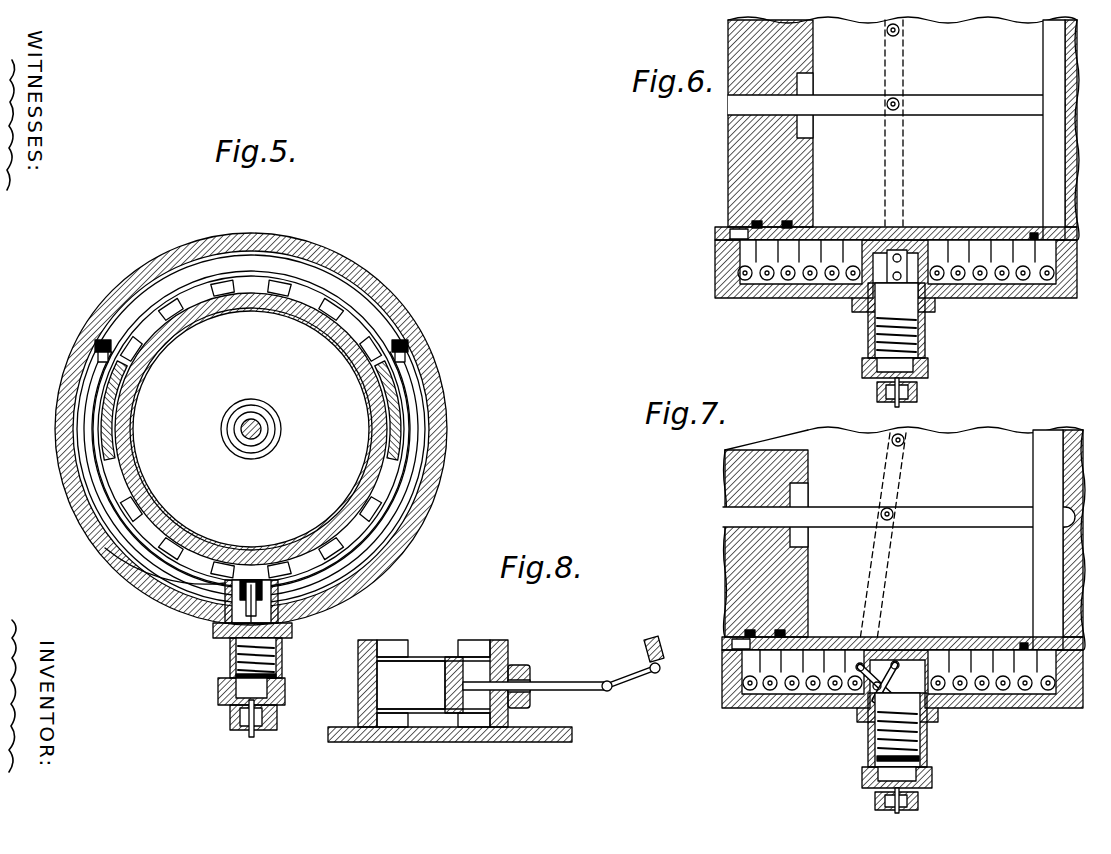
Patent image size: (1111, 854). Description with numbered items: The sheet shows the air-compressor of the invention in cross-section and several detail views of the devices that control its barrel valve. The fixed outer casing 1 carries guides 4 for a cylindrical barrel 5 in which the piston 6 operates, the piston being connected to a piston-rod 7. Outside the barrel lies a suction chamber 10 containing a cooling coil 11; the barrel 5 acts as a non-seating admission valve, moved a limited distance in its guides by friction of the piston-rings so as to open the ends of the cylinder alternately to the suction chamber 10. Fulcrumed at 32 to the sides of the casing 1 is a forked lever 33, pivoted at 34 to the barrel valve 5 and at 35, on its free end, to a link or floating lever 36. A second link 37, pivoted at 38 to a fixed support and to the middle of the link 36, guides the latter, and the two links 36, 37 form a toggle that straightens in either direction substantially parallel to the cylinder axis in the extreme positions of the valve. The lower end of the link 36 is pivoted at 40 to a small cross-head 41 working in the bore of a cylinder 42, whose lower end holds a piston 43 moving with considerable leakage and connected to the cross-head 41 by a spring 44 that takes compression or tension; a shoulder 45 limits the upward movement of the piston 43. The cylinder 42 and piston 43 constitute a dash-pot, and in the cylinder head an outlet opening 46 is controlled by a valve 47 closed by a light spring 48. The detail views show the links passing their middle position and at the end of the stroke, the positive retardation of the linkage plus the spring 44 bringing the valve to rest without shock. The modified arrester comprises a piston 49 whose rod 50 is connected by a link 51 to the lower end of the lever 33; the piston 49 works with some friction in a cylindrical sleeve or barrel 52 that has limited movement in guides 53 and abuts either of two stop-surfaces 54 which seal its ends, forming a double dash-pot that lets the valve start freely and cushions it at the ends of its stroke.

In FIG. 5, the fixed outer casing 1 is at (377, 281).
In FIG. 8, the fixed outer casing 1 is at (346, 742).
In FIG. 5, the guides 4 is at (120, 297).
In FIG. 5, the cylindrical barrel 5 is at (125, 397).
In FIG. 6, the cylindrical barrel 5 is at (852, 232).
In FIG. 7, the cylindrical barrel 5 is at (985, 637).
In FIG. 6, the piston 6 is at (728, 165).
In FIG. 7, the piston 6 is at (725, 567).
In FIG. 5, the piston-rod 7 is at (257, 420).
In FIG. 6, the piston-rod 7 is at (978, 100).
In FIG. 7, the piston-rod 7 is at (977, 505).
In FIG. 5, the suction chamber 10 is at (250, 280).
In FIG. 5, the cooling coil 11 is at (287, 263).
In FIG. 5, the fulcrum 32 is at (98, 345).
In FIG. 5, the forked lever 33 is at (407, 392).
In FIG. 8, the forked lever 33 is at (648, 642).
In FIG. 6, the forked lever 33 is at (905, 163).
In FIG. 7, the forked lever 33 is at (890, 567).
In FIG. 5, the pivot 34 is at (105, 431).
In FIG. 5, the pivot 35 is at (252, 583).
In FIG. 5, the link or floating lever 36 is at (285, 625).
In FIG. 6, the link or floating lever 36 is at (905, 270).
In FIG. 7, the link or floating lever 36 is at (900, 668).
In FIG. 5, the second link 37 is at (188, 615).
In FIG. 7, the second link 37 is at (868, 660).
In FIG. 5, the pivot 38 is at (280, 577).
In FIG. 5, the pivot 40 is at (210, 627).
In FIG. 5, the cross-head 41 is at (273, 642).
In FIG. 6, the cross-head 41 is at (857, 313).
In FIG. 5, the cylinder 42 is at (223, 652).
In FIG. 6, the cylinder 42 is at (925, 322).
In FIG. 7, the cylinder 42 is at (868, 738).
In FIG. 5, the piston 43 is at (218, 692).
In FIG. 6, the piston 43 is at (865, 368).
In FIG. 7, the piston 43 is at (878, 775).
In FIG. 5, the spring 44 is at (267, 658).
In FIG. 6, the spring 44 is at (878, 333).
In FIG. 7, the spring 44 is at (912, 727).
In FIG. 5, the shoulder 45 is at (225, 667).
In FIG. 7, the shoulder 45 is at (920, 752).
In FIG. 5, the outlet opening 46 is at (277, 705).
In FIG. 5, the valve 47 is at (233, 712).
In FIG. 6, the valve 47 is at (880, 385).
In FIG. 7, the valve 47 is at (898, 812).
In FIG. 5, the light spring 48 is at (260, 723).
In FIG. 8, the piston 49 is at (440, 668).
In FIG. 8, the rod 50 is at (565, 686).
In FIG. 8, the link 51 is at (624, 688).
In FIG. 8, the cylindrical sleeve or barrel 52 is at (452, 668).
In FIG. 8, the guides 53 is at (390, 648).
In FIG. 8, the stop-surfaces 54 is at (366, 682).